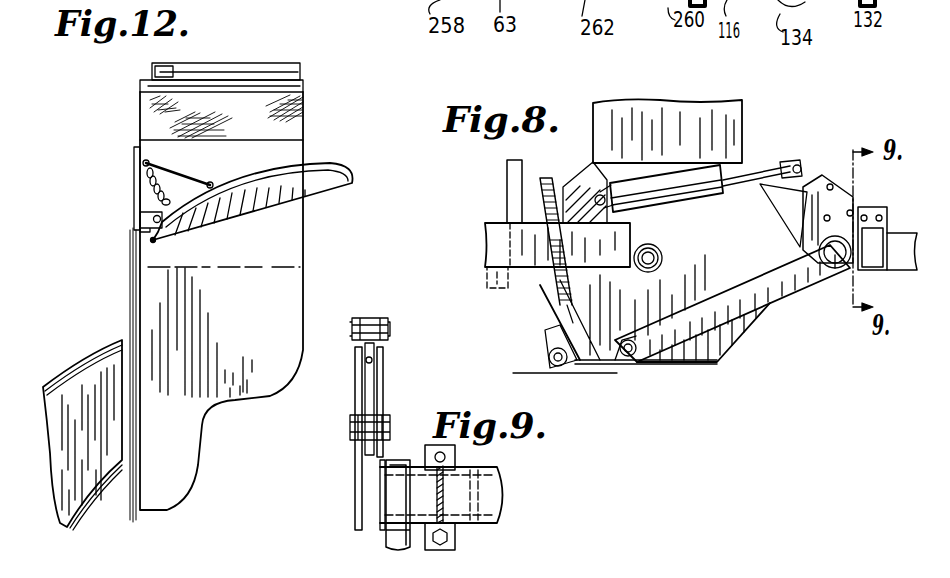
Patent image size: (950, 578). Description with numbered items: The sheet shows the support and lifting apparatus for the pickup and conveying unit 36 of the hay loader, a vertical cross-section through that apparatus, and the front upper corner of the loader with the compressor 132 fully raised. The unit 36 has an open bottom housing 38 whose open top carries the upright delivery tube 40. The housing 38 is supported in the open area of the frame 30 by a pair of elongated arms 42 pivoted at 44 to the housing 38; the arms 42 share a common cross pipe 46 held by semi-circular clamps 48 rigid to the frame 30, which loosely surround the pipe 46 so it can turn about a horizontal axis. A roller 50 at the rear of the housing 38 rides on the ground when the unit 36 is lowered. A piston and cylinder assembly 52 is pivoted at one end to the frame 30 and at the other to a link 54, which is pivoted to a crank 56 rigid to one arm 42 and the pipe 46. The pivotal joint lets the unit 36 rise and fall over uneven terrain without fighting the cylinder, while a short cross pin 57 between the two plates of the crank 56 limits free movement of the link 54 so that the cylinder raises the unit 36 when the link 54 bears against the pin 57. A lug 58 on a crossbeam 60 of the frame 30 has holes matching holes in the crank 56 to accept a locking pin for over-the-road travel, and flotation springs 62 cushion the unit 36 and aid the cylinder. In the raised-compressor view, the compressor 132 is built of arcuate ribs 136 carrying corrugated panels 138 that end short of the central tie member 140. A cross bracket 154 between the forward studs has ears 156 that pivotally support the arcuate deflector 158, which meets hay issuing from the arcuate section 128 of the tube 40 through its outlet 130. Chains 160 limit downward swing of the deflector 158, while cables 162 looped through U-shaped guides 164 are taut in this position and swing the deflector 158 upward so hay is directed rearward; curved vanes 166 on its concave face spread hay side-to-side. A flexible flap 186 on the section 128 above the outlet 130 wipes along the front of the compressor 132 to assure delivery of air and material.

In FIG. 8, the frame 30 is at (478, 218).
In FIG. 8, the pickup and conveying unit 36 is at (760, 160).
In FIG. 8, the housing 38 is at (735, 347).
In FIG. 12, the delivery tube 40 is at (105, 495).
In FIG. 8, the delivery tube 40 is at (745, 108).
In FIG. 8, the arms 42 is at (722, 290).
In FIG. 9, the arms 42 is at (390, 537).
In FIG. 8, the pivot 44 is at (628, 358).
In FIG. 9, the cross pipe 46 is at (499, 481).
In FIG. 9, the semi-circular clamps 48 is at (455, 533).
In FIG. 8, the roller 50 is at (548, 358).
In FIG. 8, the piston and cylinder assembly 52 is at (684, 178).
In FIG. 8, the link 54 is at (773, 212).
In FIG. 9, the link 54 is at (375, 385).
In FIG. 9, the crank 56 is at (360, 396).
In FIG. 8, the cross pin 57 is at (838, 183).
In FIG. 9, the cross pin 57 is at (375, 362).
In FIG. 8, the lug 58 is at (872, 213).
In FIG. 8, the crossbeam 60 is at (884, 265).
In FIG. 8, the flotation springs 62 is at (545, 188).
In FIG. 12, the arcuate section 128 is at (75, 372).
In FIG. 12, the outlet 130 is at (112, 402).
In FIG. 12, the compressor 132 is at (140, 85).
In FIG. 12, the arcuate ribs 136 is at (172, 63).
In FIG. 12, the corrugated panels 138 is at (260, 378).
In FIG. 12, the central tie member 140 is at (300, 63).
In FIG. 12, the cross bracket 154 is at (140, 222).
In FIG. 12, the ears 156 is at (153, 242).
In FIG. 12, the deflector 158 is at (320, 157).
In FIG. 12, the chains 160 is at (152, 176).
In FIG. 12, the cables 162 is at (131, 272).
In FIG. 12, the U-shaped guides 164 is at (136, 160).
In FIG. 12, the curved vanes 166 is at (324, 188).
In FIG. 12, the flap 186 is at (128, 330).